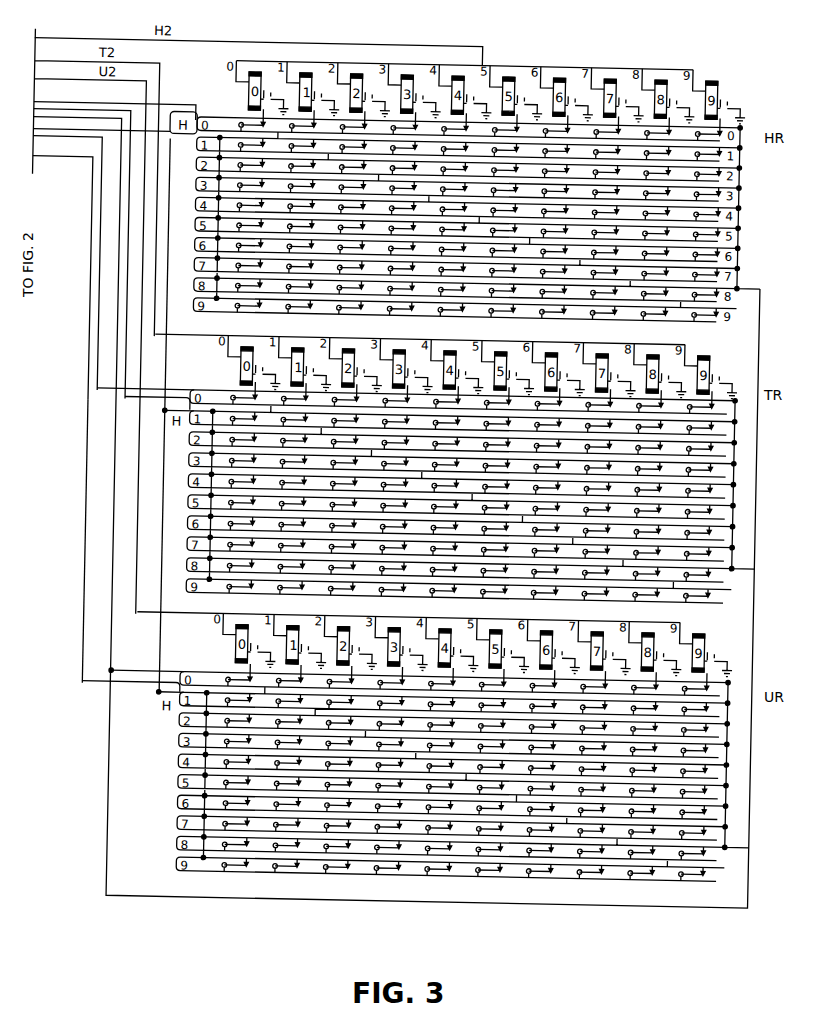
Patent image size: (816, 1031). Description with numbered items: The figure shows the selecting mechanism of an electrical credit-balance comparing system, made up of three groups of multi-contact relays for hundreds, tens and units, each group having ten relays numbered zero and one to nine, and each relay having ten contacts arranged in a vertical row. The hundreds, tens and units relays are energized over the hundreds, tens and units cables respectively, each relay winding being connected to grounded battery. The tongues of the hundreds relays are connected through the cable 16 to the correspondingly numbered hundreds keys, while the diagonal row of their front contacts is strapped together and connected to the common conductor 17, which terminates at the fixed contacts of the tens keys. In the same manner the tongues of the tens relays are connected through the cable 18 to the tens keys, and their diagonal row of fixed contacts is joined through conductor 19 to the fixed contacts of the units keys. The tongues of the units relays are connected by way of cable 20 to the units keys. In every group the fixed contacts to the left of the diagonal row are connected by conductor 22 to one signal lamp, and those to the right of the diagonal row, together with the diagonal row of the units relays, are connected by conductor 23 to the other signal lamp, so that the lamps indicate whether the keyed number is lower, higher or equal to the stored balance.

The cable 16 is at (124, 107).
The common conductor 17 is at (68, 130).
The cable 18 is at (102, 352).
The conductor 19 is at (93, 268).
The cable 20 is at (93, 538).
The conductor 22 is at (170, 362).
The conductor 23 is at (763, 628).